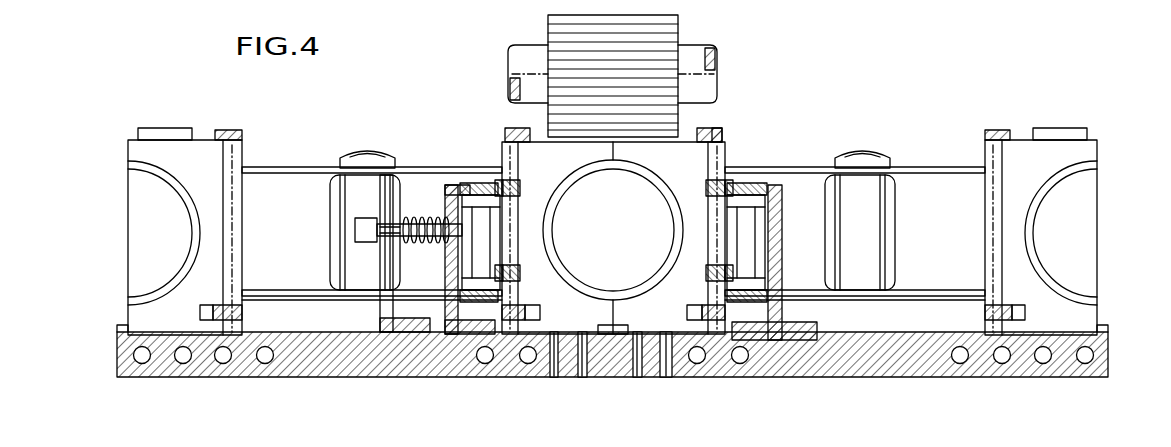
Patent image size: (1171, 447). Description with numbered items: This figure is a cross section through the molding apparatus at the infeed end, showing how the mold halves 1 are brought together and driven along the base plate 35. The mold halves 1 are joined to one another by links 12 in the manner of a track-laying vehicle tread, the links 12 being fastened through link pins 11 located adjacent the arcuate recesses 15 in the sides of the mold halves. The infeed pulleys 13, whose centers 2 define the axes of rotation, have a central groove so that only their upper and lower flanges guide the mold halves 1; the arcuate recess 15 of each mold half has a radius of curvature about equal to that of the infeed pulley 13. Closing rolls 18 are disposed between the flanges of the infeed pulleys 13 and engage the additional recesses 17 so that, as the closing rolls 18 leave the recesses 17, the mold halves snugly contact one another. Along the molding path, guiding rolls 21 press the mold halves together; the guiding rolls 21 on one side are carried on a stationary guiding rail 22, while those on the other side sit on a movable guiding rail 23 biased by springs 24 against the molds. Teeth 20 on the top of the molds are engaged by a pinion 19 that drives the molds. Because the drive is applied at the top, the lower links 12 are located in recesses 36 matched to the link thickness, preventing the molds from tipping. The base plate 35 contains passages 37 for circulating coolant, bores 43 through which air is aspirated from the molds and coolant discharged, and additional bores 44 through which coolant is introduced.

The mold halves 1 is at (185, 180).
The centers of the infeed pulleys 2 is at (352, 152).
The link pins 11 is at (990, 130).
The links 12 is at (500, 334).
The infeed pulleys 13 is at (283, 176).
The arcuate recess 15 is at (500, 172).
The additional recesses 17 is at (512, 190).
The closing rolls 18 is at (456, 184).
The pinion 19 is at (672, 35).
The teeth 20 is at (163, 131).
The guiding rolls 21 is at (498, 257).
The stationary guiding rail 22 is at (790, 340).
The movable guiding rail 23 is at (448, 256).
The springs 24 is at (428, 218).
The base plate 35 is at (120, 346).
The recesses 36 is at (541, 312).
The passages 37 is at (222, 356).
The bores 43 is at (637, 360).
The additional bores 44 is at (554, 360).